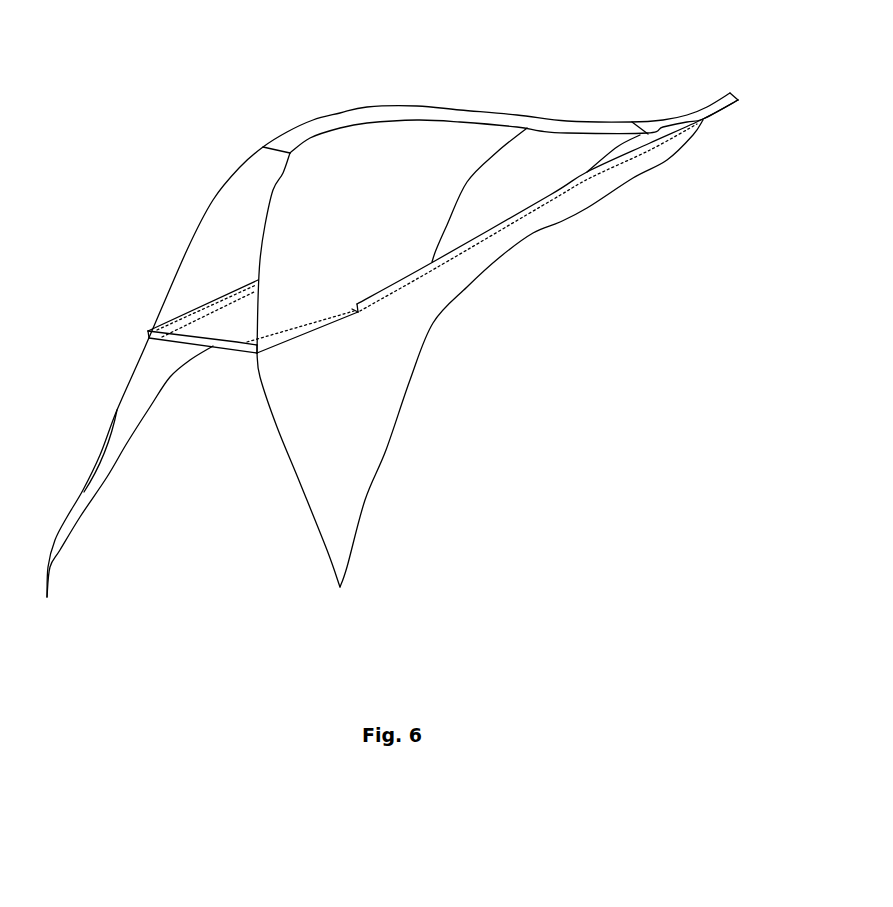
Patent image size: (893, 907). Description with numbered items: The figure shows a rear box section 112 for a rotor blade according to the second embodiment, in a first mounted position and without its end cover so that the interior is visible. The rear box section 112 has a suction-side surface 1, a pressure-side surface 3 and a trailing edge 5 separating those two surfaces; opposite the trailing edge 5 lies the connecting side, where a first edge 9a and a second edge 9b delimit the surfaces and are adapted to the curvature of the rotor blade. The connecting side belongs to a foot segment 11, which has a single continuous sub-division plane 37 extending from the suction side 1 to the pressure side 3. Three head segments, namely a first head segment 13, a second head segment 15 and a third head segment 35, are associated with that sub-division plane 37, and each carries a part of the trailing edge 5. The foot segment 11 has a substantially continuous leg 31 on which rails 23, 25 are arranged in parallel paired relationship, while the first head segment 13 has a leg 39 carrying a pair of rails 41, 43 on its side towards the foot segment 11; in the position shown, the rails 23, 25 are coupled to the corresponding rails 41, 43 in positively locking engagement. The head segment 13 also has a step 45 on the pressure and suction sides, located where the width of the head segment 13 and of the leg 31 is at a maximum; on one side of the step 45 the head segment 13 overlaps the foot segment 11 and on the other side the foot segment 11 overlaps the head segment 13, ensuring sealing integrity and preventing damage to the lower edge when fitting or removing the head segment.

The rear box section 112 is at (133, 78).
The suction-side surface 1 is at (125, 195).
The pressure-side surface 3 is at (480, 353).
The trailing edge 5 is at (460, 110).
The first edge 9a is at (433, 353).
The second edge 9b is at (152, 402).
The foot segment 11 is at (363, 415).
The first head segment 13 is at (312, 186).
The second head segment 15 is at (540, 147).
The rail 23 is at (202, 386).
The rail 25 is at (243, 350).
The leg 31 is at (210, 347).
The third head segment 35 is at (663, 118).
The sub-division plane 37 is at (438, 269).
The leg 39 is at (193, 415).
The rail 41 is at (158, 334).
The rail 43 is at (255, 343).
The step 45 is at (351, 303).